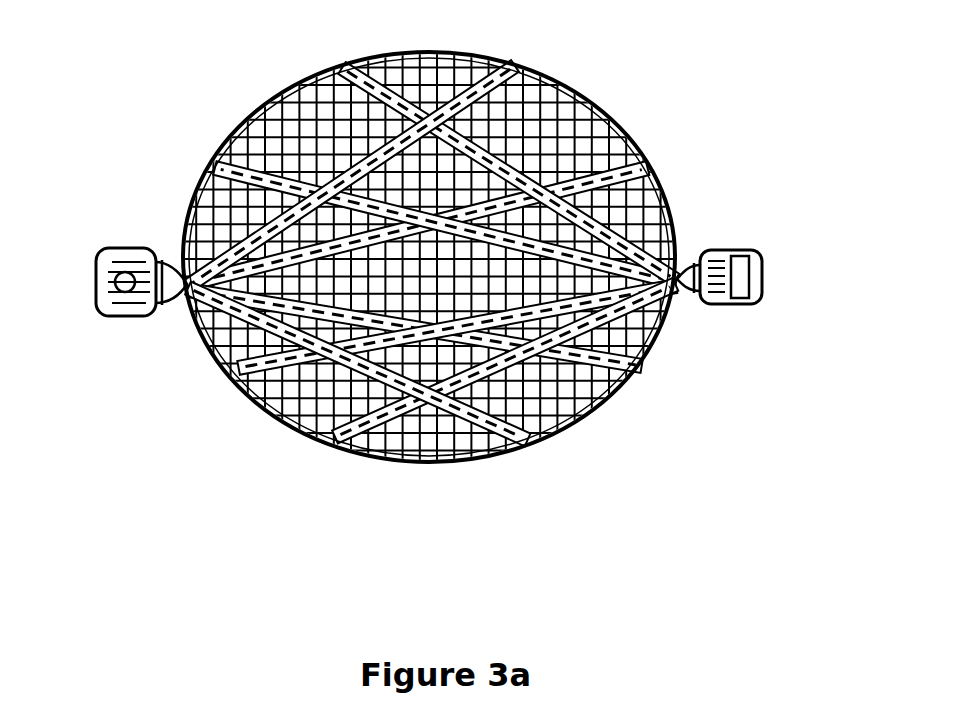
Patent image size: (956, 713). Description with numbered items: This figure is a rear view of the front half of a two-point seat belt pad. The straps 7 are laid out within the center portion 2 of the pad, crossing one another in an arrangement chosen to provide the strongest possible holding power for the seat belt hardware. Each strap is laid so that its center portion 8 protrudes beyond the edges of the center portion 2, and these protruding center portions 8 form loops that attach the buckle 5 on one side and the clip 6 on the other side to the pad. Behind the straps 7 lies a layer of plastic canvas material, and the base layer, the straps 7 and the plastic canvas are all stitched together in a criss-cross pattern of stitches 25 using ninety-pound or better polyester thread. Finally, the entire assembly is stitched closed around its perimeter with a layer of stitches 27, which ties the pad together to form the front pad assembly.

The center portion 2 is at (190, 110).
The buckle 5 is at (104, 324).
The clip 6 is at (750, 305).
The straps 7 is at (350, 63).
The center portion of the straps 8 is at (170, 255).
The criss-cross pattern of stitches 25 is at (606, 112).
The layer of stitches 27 is at (280, 413).